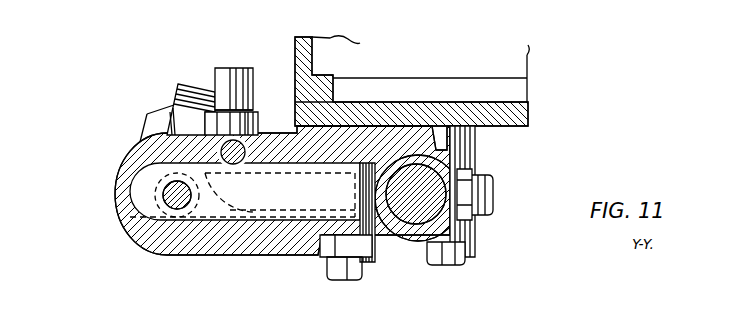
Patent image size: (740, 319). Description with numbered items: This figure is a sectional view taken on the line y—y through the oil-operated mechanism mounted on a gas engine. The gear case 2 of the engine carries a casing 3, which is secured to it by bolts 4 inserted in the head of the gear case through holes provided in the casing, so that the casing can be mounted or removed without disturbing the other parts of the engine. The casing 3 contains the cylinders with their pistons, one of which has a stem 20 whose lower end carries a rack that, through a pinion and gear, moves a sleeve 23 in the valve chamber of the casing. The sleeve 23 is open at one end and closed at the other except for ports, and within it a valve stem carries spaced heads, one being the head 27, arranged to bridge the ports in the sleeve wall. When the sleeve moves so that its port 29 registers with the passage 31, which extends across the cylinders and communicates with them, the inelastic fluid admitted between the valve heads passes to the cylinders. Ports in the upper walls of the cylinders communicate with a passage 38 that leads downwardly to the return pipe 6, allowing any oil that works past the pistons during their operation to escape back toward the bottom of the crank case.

The gear case 2 is at (327, 50).
The casing 3 is at (140, 147).
The bolts 4 is at (443, 257).
The return pipe 6 is at (230, 88).
The stem 20 is at (165, 190).
The sleeve 23 is at (415, 192).
The head 27 is at (473, 190).
The port 29 is at (455, 157).
The passage 31 is at (140, 190).
The passage 38 is at (224, 140).